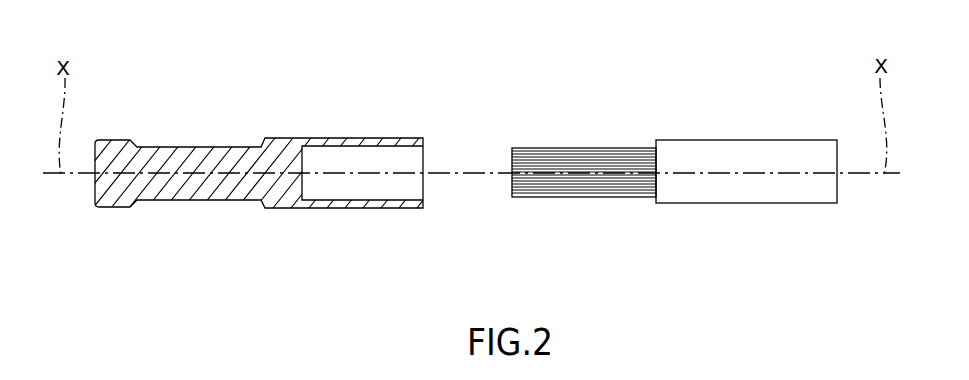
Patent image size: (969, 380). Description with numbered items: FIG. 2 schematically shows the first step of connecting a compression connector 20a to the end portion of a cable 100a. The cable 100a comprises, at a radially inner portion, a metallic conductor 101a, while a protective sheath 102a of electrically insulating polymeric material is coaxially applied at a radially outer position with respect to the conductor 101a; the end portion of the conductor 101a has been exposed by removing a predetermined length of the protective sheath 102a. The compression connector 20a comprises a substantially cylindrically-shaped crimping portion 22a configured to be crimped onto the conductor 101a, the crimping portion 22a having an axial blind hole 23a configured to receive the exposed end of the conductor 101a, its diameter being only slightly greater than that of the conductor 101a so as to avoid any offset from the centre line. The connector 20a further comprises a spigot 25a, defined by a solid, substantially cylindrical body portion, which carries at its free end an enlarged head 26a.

The compression connector 20a is at (272, 108).
The crimping portion 22a is at (354, 136).
The axial blind hole 23a is at (361, 190).
The spigot 25a is at (173, 128).
The enlarged head 26a is at (97, 207).
The cable 100a is at (716, 118).
The metallic conductor 101a is at (563, 158).
The protective sheath 102a is at (745, 190).